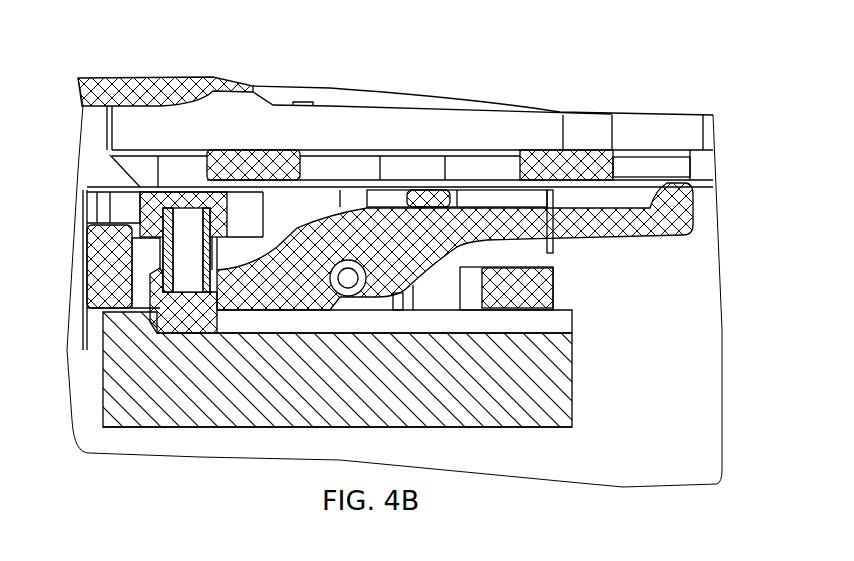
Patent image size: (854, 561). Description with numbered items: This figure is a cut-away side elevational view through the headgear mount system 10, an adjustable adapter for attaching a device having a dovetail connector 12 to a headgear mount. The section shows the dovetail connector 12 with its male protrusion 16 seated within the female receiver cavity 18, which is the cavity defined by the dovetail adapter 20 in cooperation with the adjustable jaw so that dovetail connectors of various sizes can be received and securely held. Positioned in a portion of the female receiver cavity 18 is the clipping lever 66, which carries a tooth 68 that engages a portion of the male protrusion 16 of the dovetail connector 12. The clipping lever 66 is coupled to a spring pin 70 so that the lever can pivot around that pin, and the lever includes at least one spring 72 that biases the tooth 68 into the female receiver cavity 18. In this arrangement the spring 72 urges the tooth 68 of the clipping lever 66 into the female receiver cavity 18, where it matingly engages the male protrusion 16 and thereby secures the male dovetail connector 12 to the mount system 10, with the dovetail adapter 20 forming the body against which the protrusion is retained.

The headgear mount device and system 10 is at (688, 82).
The dovetail connector 12 is at (573, 383).
The male protrusion 16 is at (493, 427).
The female receiver cavity 18 is at (587, 322).
The dovetail adapter 20 is at (102, 253).
The clipping lever 66 is at (593, 223).
The tooth 68 is at (165, 318).
The spring pin 70 is at (343, 268).
The spring 72 is at (190, 223).